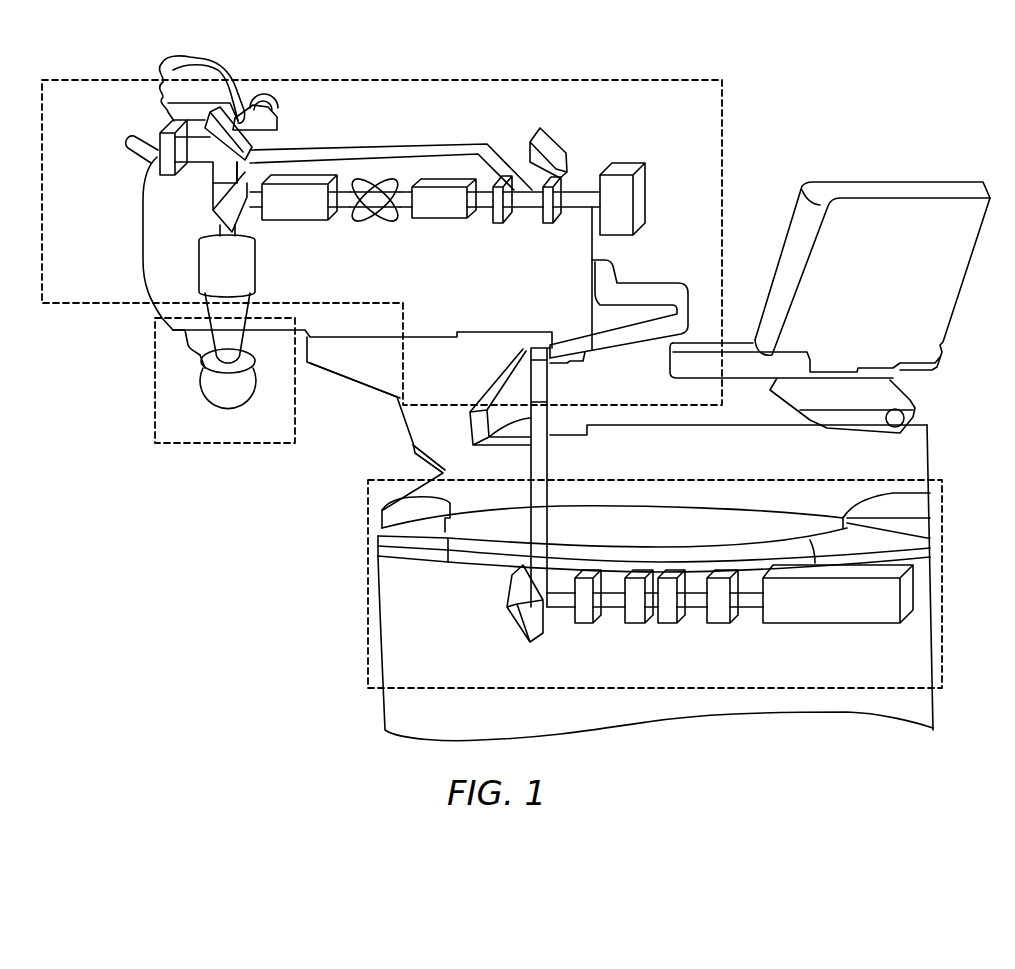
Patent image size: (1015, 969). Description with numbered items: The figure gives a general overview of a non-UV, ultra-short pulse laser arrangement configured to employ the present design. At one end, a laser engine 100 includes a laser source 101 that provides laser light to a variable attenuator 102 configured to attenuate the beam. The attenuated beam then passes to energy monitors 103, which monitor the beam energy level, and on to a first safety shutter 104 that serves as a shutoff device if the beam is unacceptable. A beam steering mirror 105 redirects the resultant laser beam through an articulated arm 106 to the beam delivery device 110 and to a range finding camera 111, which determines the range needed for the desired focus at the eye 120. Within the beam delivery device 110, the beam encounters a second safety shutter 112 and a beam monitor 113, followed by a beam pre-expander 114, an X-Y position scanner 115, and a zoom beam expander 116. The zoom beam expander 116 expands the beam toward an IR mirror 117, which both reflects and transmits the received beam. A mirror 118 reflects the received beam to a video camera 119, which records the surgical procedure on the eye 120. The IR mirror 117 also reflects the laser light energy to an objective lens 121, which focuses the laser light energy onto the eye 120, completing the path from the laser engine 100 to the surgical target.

The laser engine 100 is at (358, 534).
The laser source 101 is at (838, 615).
The variable attenuator 102 is at (722, 629).
The energy monitors 103 is at (663, 628).
The first safety shutter 104 is at (589, 569).
The beam steering mirror 105 is at (530, 650).
The articulated arm 106 is at (473, 444).
The beam delivery device 110 is at (650, 80).
The range finding camera 111 is at (623, 197).
The second safety shutter 112 is at (551, 227).
The beam monitor 113 is at (556, 147).
The beam pre-expander 114 is at (441, 215).
The X-Y (position) scanner 115 is at (374, 172).
The zoom beam expander 116 is at (312, 214).
The IR mirror 117 is at (218, 193).
The mirror 118 is at (232, 132).
The video camera 119 is at (167, 147).
The eye 120 is at (259, 448).
The objective lens 121 is at (246, 263).